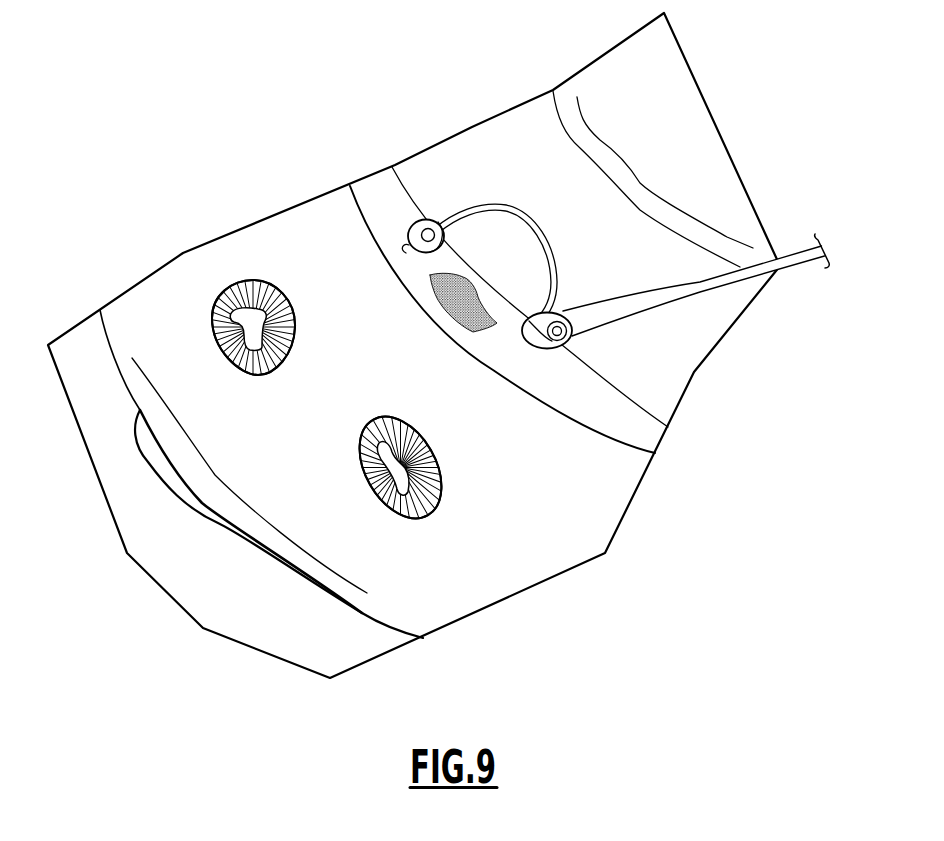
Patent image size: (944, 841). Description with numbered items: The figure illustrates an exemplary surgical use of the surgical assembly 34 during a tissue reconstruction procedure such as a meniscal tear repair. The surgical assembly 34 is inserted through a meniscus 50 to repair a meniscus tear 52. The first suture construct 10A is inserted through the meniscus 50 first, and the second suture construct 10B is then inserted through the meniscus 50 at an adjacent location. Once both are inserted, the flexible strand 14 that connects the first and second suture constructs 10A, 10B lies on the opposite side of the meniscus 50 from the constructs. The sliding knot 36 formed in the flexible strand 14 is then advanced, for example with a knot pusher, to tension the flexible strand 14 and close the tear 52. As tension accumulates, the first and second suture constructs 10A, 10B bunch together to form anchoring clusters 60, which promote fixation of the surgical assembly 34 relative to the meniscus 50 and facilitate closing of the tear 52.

The first suture construct 10A is at (216, 344).
The second suture construct 10B is at (366, 486).
The flexible strand 14 is at (526, 213).
The surgical assembly 34 is at (443, 534).
The sliding knot 36 is at (577, 340).
The meniscus 50 is at (270, 507).
The meniscus tear 52 is at (452, 315).
The anchoring clusters 60 is at (267, 322).